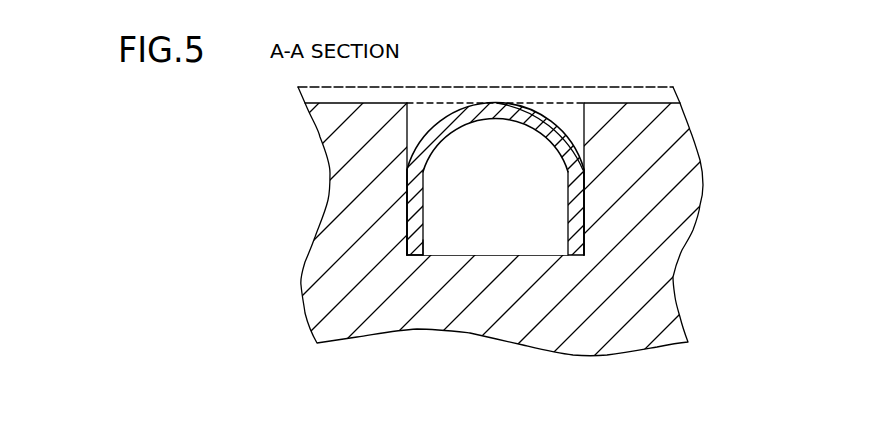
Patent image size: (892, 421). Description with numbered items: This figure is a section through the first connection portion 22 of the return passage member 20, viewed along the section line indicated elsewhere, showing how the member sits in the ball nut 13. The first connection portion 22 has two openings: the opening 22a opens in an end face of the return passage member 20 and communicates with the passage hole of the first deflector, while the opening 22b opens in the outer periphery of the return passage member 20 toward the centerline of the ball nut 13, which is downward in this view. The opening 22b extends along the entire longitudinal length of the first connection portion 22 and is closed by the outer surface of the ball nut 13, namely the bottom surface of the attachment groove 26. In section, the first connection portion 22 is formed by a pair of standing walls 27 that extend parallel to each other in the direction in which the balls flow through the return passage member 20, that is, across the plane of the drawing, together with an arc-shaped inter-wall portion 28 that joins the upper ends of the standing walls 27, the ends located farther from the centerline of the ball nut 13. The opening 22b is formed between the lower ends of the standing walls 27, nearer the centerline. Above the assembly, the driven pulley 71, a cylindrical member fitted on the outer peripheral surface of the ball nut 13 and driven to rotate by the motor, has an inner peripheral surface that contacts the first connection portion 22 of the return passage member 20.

The ball nut 13 is at (699, 189).
The return passage member 20 is at (521, 150).
The first connection portion 22 is at (521, 150).
The opening 22a is at (523, 145).
The opening 22b is at (424, 253).
The attachment groove 26 is at (498, 254).
The standing walls 27 is at (424, 209).
The inter-wall portion 28 is at (462, 128).
The driven pulley 71 is at (643, 86).